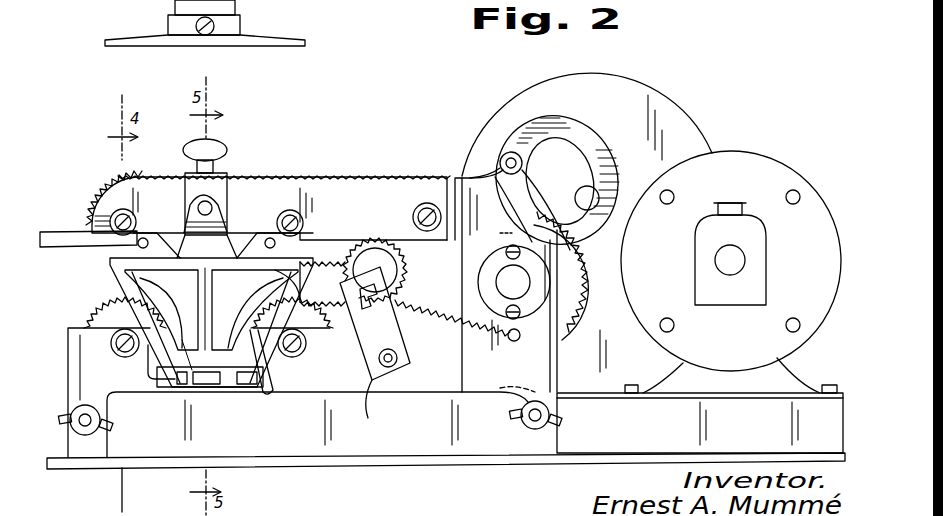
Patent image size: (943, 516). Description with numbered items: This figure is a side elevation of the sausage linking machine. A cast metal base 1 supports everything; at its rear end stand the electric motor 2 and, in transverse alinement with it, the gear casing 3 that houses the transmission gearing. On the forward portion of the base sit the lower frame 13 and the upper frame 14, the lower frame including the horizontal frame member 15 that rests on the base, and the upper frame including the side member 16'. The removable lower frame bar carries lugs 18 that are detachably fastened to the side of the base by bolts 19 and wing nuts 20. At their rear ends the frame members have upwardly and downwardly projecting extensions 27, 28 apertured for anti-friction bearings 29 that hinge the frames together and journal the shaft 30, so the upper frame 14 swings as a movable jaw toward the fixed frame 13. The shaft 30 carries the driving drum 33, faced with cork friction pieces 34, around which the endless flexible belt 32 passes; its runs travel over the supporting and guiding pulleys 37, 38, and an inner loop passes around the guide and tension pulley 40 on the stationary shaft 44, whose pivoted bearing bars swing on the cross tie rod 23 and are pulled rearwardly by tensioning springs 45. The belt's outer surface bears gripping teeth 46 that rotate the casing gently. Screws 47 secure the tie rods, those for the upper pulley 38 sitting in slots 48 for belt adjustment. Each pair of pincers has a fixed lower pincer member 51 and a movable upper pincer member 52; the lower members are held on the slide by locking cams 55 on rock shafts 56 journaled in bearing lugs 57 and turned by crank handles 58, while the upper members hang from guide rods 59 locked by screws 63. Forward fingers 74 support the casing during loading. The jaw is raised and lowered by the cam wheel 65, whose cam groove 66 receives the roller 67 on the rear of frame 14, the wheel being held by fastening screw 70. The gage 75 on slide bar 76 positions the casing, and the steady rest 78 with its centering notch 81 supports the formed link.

The base 1 is at (394, 460).
The electric motor 2 is at (785, 176).
The gear casing 3 is at (669, 108).
The lower frame 13 is at (347, 385).
The upper frame 14 is at (334, 184).
The lower frame member 15 is at (72, 354).
The upper frame member 16' is at (443, 193).
The lugs 18 is at (110, 412).
The bolts 19 is at (78, 423).
The wing nuts 20 is at (88, 434).
The cross tie rod 23 is at (398, 359).
The upwardly projecting extensions 27 is at (470, 332).
The downwardly projecting extensions 28 is at (509, 285).
The anti-friction bearings 29 is at (516, 234).
The shaft 30 is at (128, 255).
The endless flexible belt 32 is at (355, 262).
The driving drum or pulley 33 is at (586, 318).
The friction pieces 34 is at (390, 266).
The supporting and guiding pulleys 37 is at (108, 323).
The supporting and guiding pulleys 38 is at (304, 238).
The guide and tension pulley 40 is at (345, 270).
The rod or stationary shaft 44 is at (348, 352).
The tensioning springs 45 is at (500, 340).
The gripping teeth 46 is at (590, 262).
The screws 47 is at (133, 211).
The slots 48 is at (90, 218).
The lower pincer member 51 is at (270, 215).
The upper pincer member 52 is at (227, 233).
The locking cams 55 is at (210, 390).
The rock shafts 56 is at (180, 390).
The bearing lugs 57 is at (250, 388).
The crank handle 58 is at (146, 366).
The guide pins or rods 59 is at (212, 201).
The guiding and locking screws 63 is at (215, 148).
The cam wheel 65 is at (556, 140).
The cam groove 66 is at (598, 142).
The roller 67 is at (503, 158).
The fastening screw 70 is at (600, 195).
The fingers 74 is at (78, 245).
The gage 75 is at (284, 38).
The slide bar 76 is at (258, 352).
The steady rest 78 is at (193, 297).
The centering notch 81 is at (225, 293).